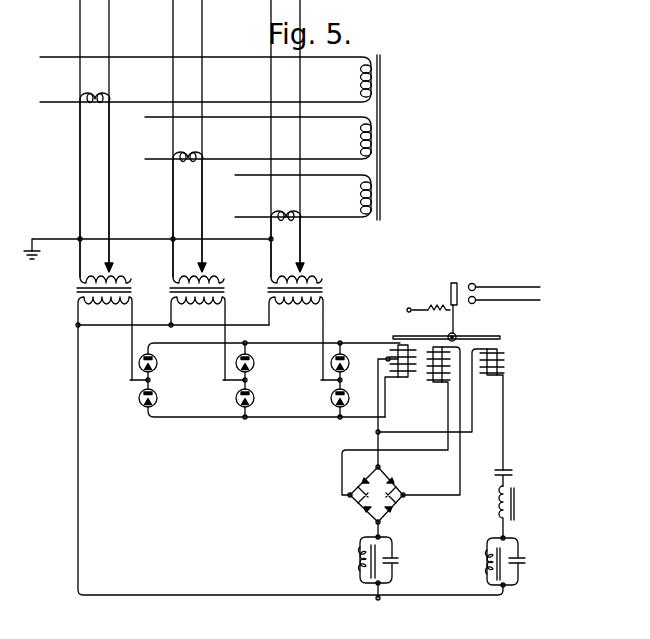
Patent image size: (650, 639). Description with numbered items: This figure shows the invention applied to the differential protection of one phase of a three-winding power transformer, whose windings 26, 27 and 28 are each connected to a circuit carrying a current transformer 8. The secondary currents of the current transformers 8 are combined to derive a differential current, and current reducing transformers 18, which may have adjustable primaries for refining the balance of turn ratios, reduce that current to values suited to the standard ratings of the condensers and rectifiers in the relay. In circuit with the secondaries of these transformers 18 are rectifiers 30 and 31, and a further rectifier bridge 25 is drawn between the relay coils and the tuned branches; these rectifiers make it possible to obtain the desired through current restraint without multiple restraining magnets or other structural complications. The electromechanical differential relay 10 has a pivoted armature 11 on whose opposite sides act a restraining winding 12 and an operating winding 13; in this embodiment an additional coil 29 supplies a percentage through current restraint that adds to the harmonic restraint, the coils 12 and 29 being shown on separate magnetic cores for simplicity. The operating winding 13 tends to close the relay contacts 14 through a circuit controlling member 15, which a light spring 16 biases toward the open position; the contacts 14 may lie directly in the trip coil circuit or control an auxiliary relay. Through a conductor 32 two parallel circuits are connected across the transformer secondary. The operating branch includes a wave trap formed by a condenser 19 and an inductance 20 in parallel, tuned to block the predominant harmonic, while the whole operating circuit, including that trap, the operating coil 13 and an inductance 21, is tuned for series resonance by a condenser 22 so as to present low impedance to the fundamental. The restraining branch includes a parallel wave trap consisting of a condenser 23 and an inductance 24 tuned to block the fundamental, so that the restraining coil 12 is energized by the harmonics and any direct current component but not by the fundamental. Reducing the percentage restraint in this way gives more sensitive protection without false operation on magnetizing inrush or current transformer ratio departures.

The current transformers 8 is at (96, 93).
The winding 28 is at (360, 77).
The winding 27 is at (360, 138).
The winding 26 is at (360, 197).
The step-down transformer 18 is at (76, 290).
The rectifier 30 is at (158, 363).
The rectifier 31 is at (158, 398).
The pivoted armature 11 is at (470, 337).
The circuit controlling member 15 is at (450, 293).
The relay contacts 14 is at (476, 285).
The light spring 16 is at (424, 313).
The coil 29 is at (411, 379).
The restraining winding 12 is at (430, 381).
The differential relay 10 is at (446, 415).
The operating winding 13 is at (504, 362).
The rectifier bridge 25 is at (376, 494).
The inductance 24 is at (359, 561).
The condenser 23 is at (398, 561).
The condenser 22 is at (512, 473).
The inductance 21 is at (497, 506).
The inductance 20 is at (487, 562).
The condenser 19 is at (525, 560).
The conductor 32 is at (176, 594).